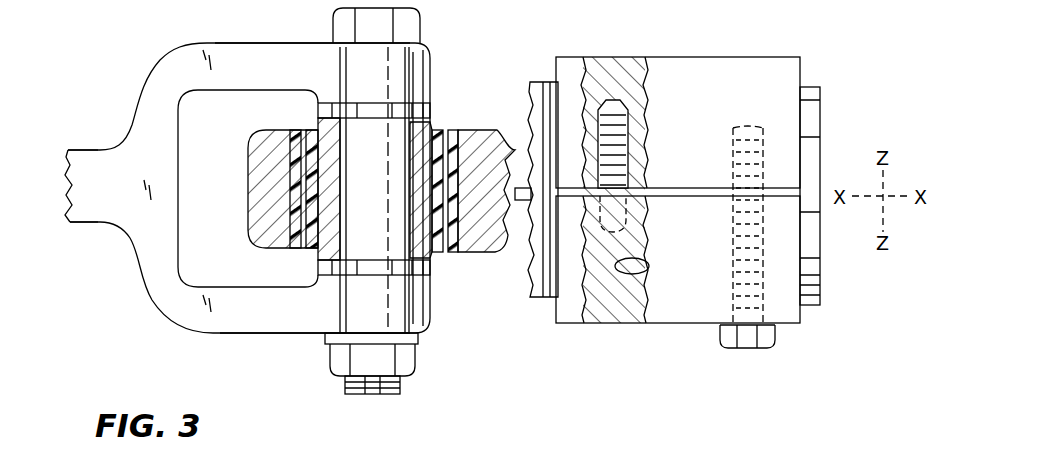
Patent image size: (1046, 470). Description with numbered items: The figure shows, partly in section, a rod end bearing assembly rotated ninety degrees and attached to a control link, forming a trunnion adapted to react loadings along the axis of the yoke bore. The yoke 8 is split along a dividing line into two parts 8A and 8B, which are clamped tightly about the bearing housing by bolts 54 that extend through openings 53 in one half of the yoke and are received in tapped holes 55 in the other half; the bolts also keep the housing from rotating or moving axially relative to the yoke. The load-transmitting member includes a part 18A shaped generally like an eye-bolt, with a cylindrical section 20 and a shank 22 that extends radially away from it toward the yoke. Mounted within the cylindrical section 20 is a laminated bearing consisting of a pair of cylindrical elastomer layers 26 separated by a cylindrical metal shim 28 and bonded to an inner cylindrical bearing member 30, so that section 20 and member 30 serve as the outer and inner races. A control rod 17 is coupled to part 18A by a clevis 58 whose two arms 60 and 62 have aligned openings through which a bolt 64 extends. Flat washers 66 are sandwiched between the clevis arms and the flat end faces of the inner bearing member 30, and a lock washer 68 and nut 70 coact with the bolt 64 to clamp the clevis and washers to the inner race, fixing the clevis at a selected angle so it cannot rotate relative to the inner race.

The clevis 58 is at (168, 58).
The clevis arm 60 is at (284, 45).
The clevis arm 62 is at (248, 335).
The control rod 17 is at (94, 149).
The cylindrical section 20 is at (253, 133).
The elastomer layers 26 is at (325, 146).
The metal shim 28 is at (440, 132).
The flat washers 66 is at (322, 110).
The inner cylindrical bearing member 30 is at (327, 240).
The lock washer 68 is at (418, 340).
The nut 70 is at (410, 364).
The bolt 64 is at (344, 390).
The shank 22 is at (522, 150).
The load-transmitting member part 18A is at (491, 205).
The yoke 8 is at (674, 193).
The yoke part 8A is at (722, 58).
The yoke part 8B is at (643, 325).
The tapped holes 55 is at (622, 120).
The openings 53 is at (649, 266).
The bolts 54 is at (730, 336).